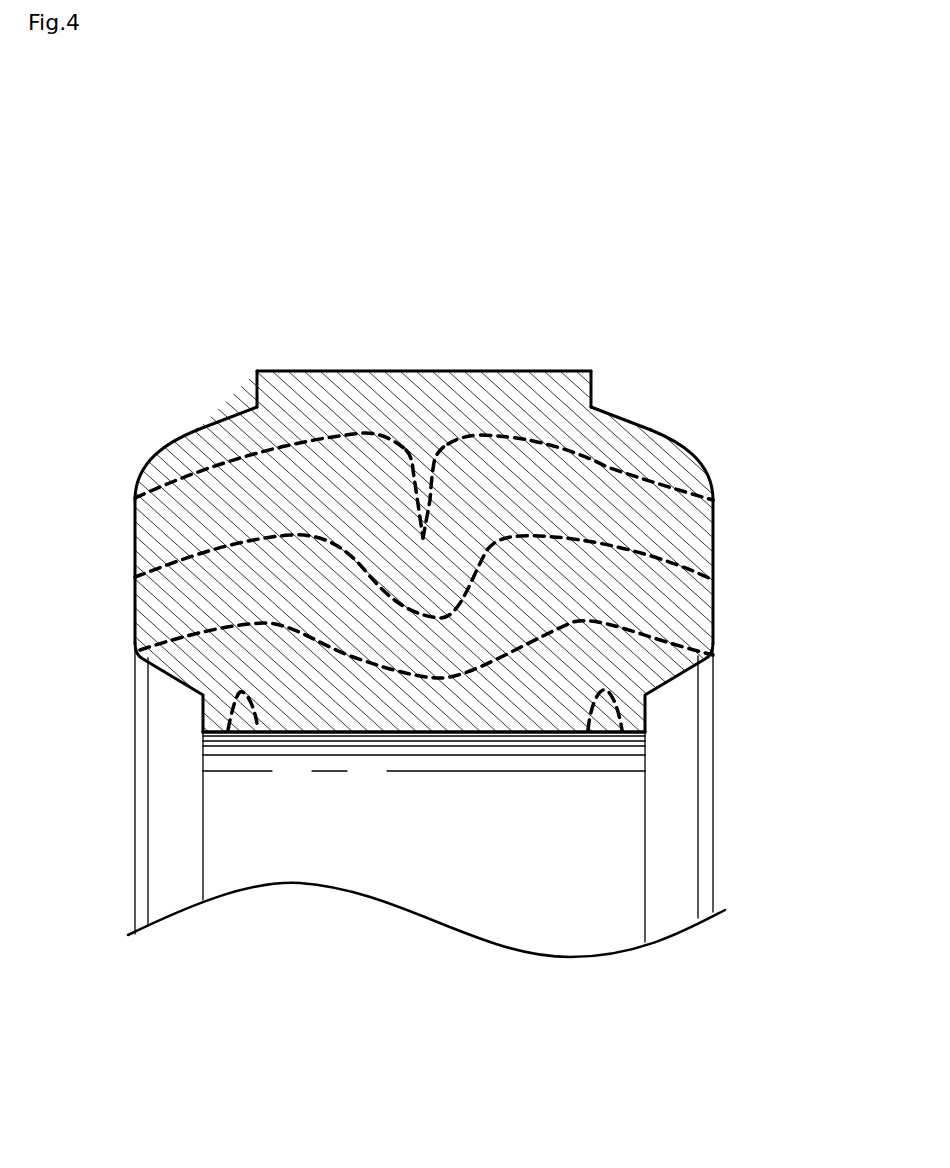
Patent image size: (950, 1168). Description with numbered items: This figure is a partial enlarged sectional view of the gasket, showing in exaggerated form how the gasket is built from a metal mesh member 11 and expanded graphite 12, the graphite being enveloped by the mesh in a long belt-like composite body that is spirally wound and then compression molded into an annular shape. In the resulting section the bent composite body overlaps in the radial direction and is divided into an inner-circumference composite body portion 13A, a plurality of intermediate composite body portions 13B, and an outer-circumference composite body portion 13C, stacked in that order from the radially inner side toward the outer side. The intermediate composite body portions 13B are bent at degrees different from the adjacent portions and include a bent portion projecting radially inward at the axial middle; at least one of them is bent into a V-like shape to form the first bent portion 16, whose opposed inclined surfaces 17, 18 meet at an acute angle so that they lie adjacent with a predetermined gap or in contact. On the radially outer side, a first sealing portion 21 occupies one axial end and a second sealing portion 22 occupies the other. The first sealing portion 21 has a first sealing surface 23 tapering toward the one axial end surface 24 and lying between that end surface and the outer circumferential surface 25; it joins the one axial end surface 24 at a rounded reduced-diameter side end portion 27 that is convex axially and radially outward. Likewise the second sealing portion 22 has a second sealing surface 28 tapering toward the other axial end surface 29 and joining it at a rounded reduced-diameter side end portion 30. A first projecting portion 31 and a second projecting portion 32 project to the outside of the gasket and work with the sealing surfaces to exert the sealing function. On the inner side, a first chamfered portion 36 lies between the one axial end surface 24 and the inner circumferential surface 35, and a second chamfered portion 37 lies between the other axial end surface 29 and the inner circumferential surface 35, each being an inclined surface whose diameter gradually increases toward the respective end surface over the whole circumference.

The metal mesh member 11 is at (533, 440).
The expanded graphite 12 is at (513, 387).
The inner-circumference composite body portion 13A is at (549, 716).
The intermediate composite body portions 13B is at (149, 528).
The outer-circumference composite body portion 13C is at (288, 403).
The first bent portion 16 is at (427, 597).
The inclined surface 17 is at (420, 490).
The inclined surface 18 is at (423, 478).
The first sealing portion 21 is at (162, 338).
The second sealing portion 22 is at (686, 338).
The first sealing surface 23 is at (215, 424).
The one axial end surface 24 is at (133, 618).
The outer circumferential surface 25 is at (352, 371).
The reduced-diameter side end portion 27 is at (138, 465).
The second sealing surface 28 is at (637, 422).
The other axial end surface 29 is at (713, 556).
The reduced-diameter side end portion 30 is at (709, 470).
The first projecting portion 31 is at (255, 371).
The second projecting portion 32 is at (592, 371).
The inner circumferential surface 35 is at (387, 735).
The first chamfered portion 36 is at (200, 693).
The second chamfered portion 37 is at (645, 693).